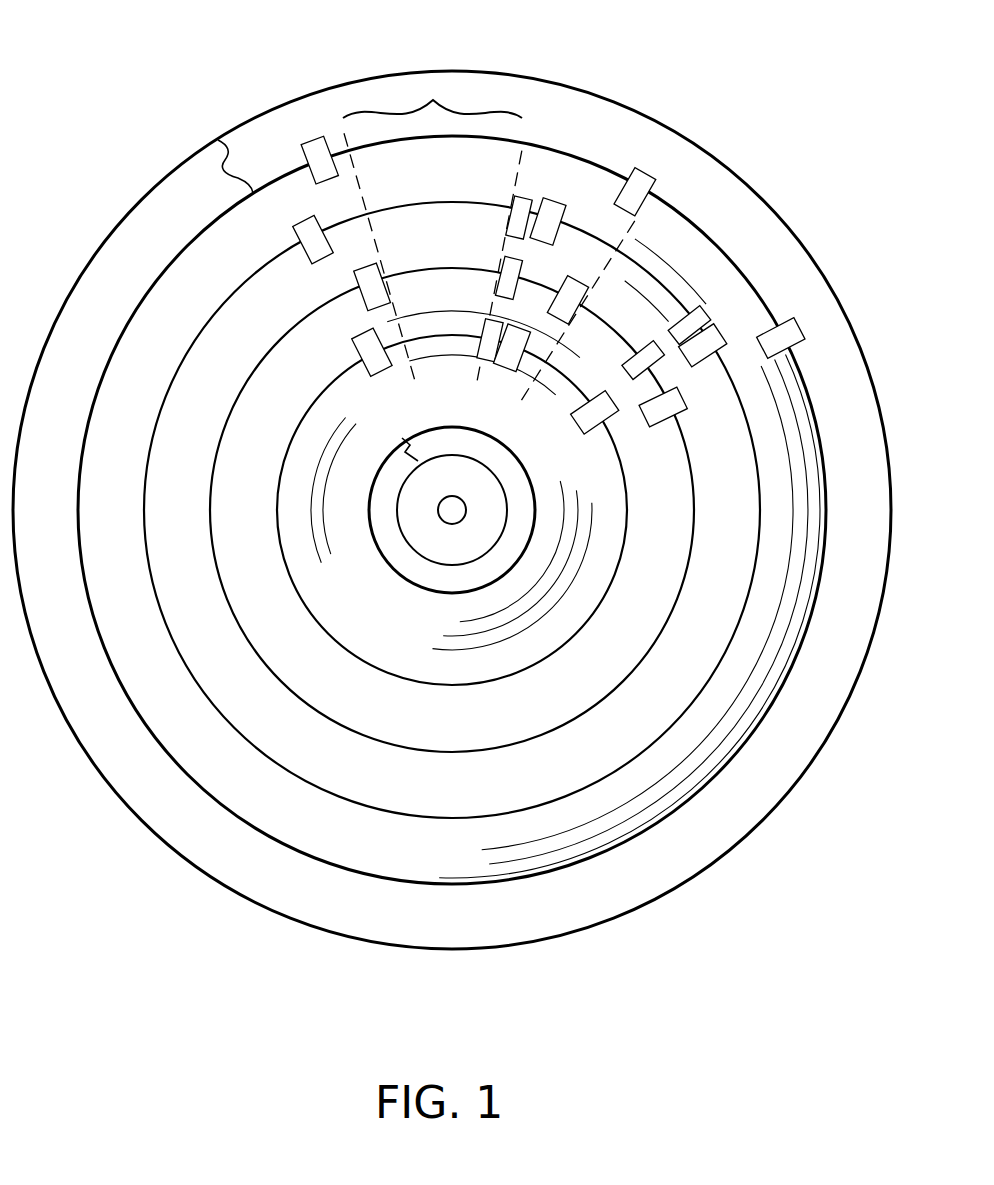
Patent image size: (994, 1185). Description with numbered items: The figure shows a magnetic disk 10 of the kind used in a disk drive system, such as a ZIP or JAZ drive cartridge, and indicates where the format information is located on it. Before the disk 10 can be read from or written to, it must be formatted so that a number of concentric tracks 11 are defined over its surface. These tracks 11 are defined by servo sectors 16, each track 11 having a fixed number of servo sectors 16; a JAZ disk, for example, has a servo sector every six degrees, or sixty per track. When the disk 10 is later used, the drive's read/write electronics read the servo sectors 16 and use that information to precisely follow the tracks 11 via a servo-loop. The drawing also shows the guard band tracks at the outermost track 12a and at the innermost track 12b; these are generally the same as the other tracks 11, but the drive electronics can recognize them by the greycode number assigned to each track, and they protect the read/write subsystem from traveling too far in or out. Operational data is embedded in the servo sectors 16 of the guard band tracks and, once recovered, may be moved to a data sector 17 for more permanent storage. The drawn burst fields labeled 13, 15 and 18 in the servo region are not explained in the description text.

The magnetic disk 10 is at (732, 150).
The concentric tracks 11 is at (147, 447).
The outermost guard band track 12a is at (227, 173).
The innermost guard band track 12b is at (408, 458).
The servo burst B 13 is at (573, 280).
The servo burst A 15 is at (556, 200).
The servo sectors 16 is at (520, 400).
The data sector 17 is at (434, 98).
The servo burst fields 18 is at (490, 333).